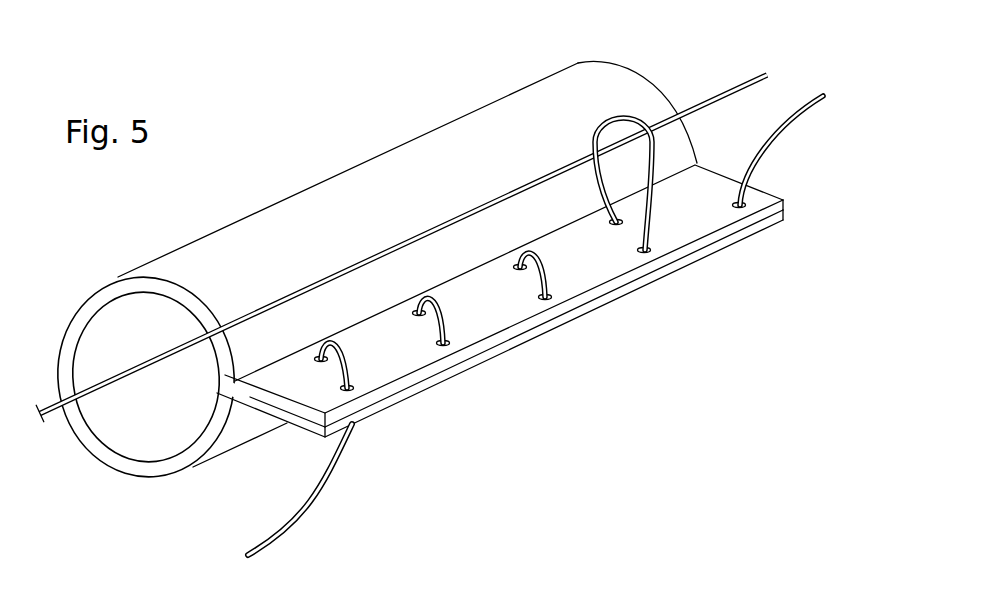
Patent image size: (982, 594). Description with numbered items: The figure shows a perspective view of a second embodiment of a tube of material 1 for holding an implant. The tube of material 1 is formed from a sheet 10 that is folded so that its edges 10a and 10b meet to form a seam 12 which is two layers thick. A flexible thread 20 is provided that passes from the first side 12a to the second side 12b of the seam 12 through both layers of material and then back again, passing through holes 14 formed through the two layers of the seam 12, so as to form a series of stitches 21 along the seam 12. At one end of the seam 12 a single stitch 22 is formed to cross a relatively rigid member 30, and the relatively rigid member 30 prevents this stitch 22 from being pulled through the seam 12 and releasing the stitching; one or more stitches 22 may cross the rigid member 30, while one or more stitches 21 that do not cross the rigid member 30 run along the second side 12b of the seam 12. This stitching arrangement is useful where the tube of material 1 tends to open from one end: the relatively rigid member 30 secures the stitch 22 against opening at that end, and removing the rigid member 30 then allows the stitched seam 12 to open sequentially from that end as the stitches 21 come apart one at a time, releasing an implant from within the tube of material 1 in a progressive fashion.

The tube of material 1 is at (293, 169).
The sheet 10 is at (437, 243).
The edge 10a is at (778, 222).
The edge 10b is at (786, 203).
The seam 12 is at (722, 167).
The first side of the seam 12a is at (503, 357).
The second side of the seam 12b is at (514, 312).
The holes 14 is at (316, 358).
The flexible thread 20 is at (307, 507).
The stitches 21 is at (338, 338).
The stitch 22 is at (632, 118).
The relatively rigid member 30 is at (42, 422).